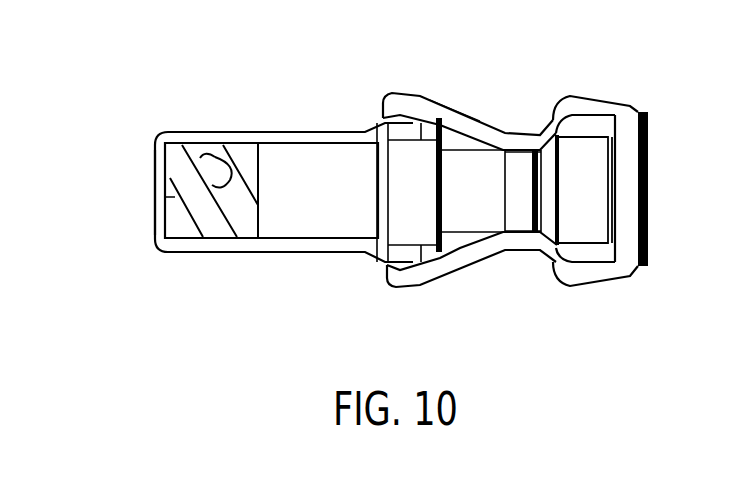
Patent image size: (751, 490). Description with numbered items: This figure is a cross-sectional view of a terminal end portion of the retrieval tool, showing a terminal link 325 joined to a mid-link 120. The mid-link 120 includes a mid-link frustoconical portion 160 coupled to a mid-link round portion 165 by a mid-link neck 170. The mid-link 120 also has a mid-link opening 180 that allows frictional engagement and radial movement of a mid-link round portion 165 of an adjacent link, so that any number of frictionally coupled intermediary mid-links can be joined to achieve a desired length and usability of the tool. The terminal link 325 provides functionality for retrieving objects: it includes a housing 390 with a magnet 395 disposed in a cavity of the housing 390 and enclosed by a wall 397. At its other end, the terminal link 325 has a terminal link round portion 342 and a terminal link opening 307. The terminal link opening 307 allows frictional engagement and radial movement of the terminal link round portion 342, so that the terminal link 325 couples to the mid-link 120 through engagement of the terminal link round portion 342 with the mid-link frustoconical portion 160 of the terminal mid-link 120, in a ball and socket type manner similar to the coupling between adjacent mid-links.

The mid-link 120 is at (457, 108).
The mid-link frustoconical portion 160 is at (403, 92).
The mid-link round portion 165 is at (583, 117).
The mid-link neck 170 is at (515, 130).
The mid-link opening 180 is at (597, 180).
The terminal link opening 307 is at (418, 203).
The terminal link 325 is at (316, 129).
The terminal link round portion 342 is at (393, 250).
The housing 390 is at (208, 130).
The magnet 395 is at (175, 197).
The wall 397 is at (153, 162).